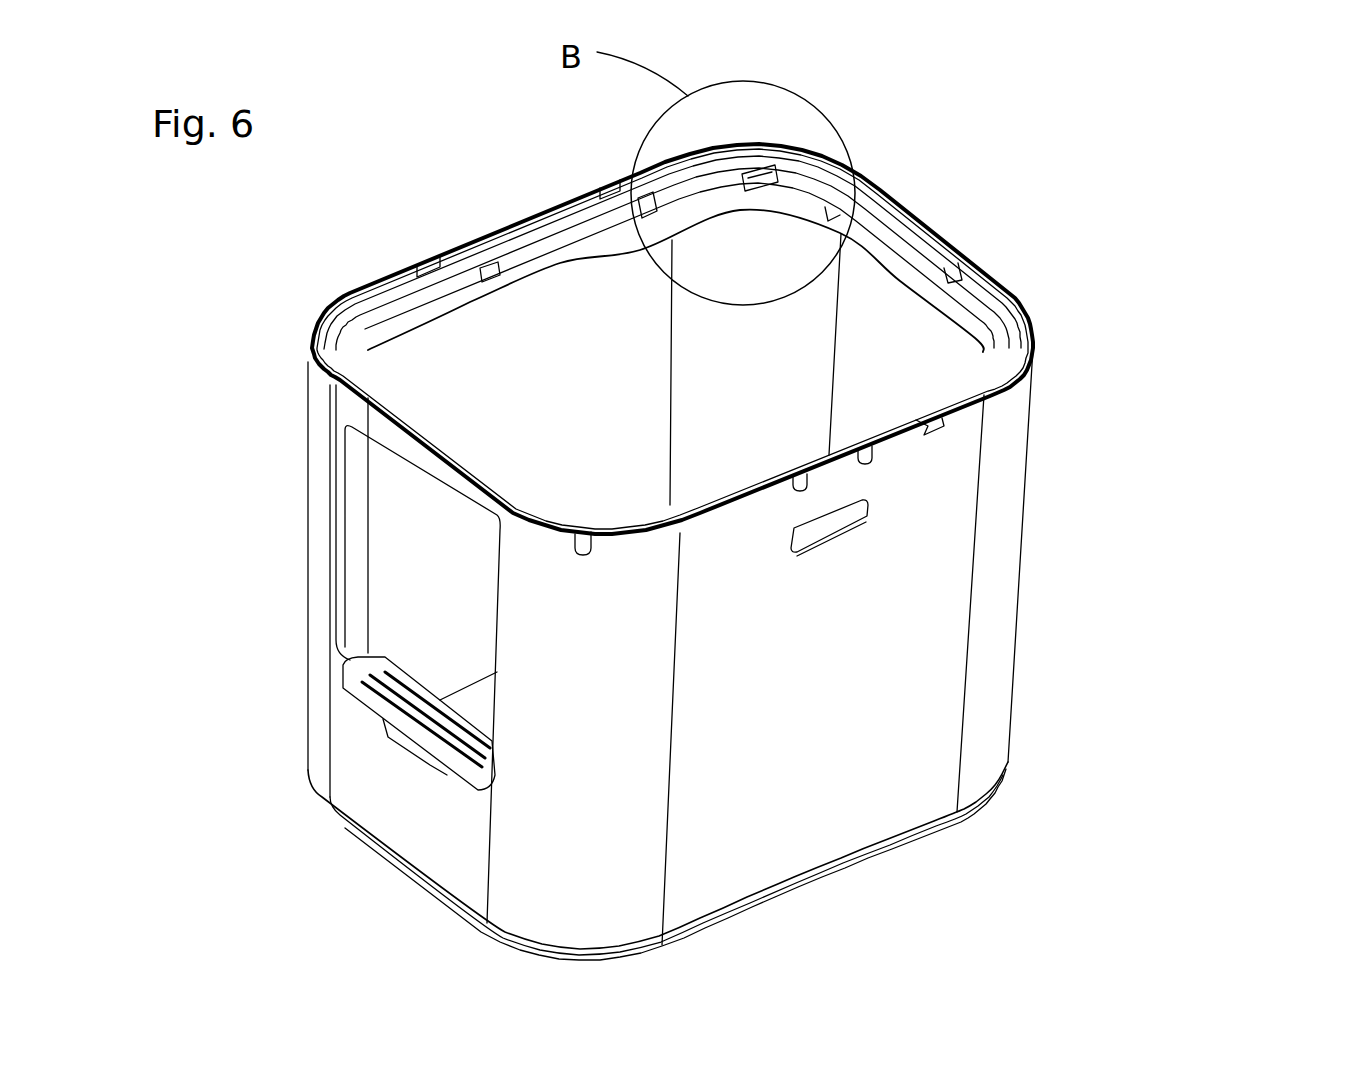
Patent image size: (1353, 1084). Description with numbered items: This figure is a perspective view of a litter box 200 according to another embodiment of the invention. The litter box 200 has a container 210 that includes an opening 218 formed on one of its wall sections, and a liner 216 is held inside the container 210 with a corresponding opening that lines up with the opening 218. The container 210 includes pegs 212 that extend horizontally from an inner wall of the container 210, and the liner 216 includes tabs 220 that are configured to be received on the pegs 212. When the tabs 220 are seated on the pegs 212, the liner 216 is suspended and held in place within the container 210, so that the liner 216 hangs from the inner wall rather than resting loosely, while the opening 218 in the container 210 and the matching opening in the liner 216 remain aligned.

The litter box 200 is at (1076, 577).
The container 210 is at (847, 827).
The pegs 212 is at (767, 172).
The liner 216 is at (467, 342).
The opening 218 is at (417, 737).
The tabs 220 is at (743, 204).